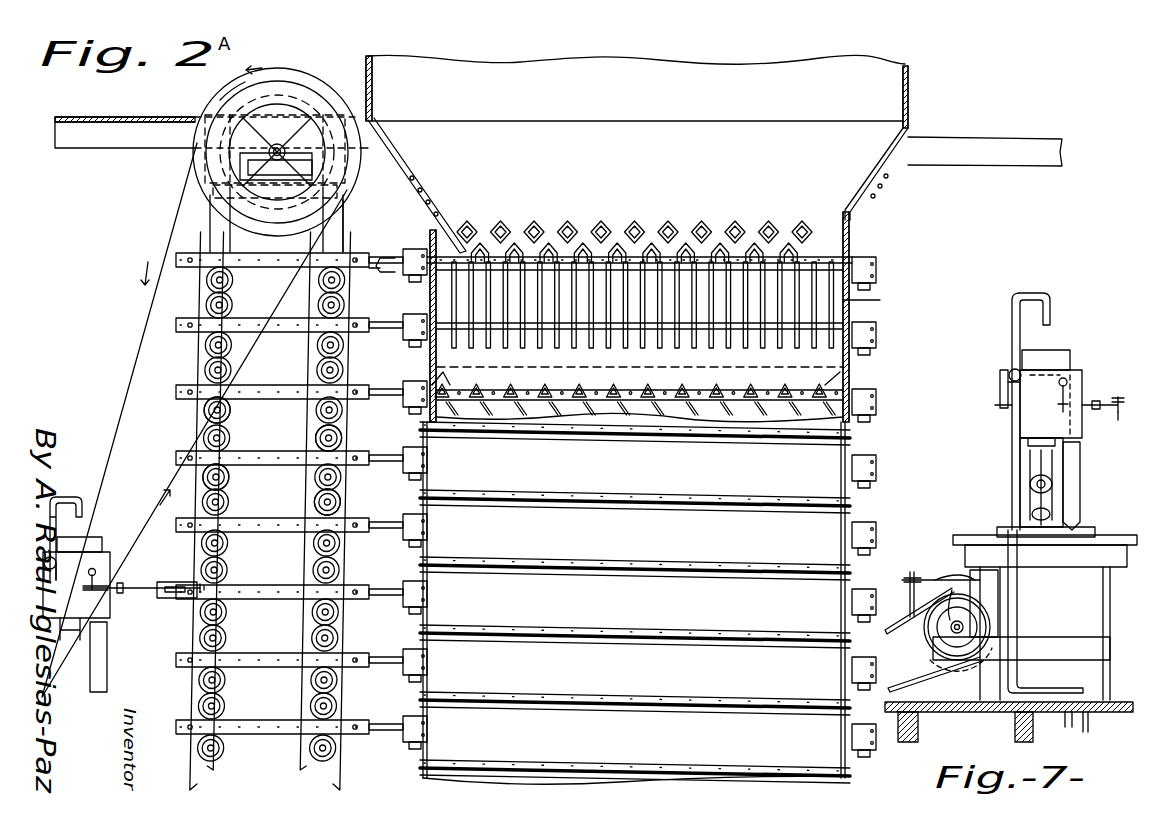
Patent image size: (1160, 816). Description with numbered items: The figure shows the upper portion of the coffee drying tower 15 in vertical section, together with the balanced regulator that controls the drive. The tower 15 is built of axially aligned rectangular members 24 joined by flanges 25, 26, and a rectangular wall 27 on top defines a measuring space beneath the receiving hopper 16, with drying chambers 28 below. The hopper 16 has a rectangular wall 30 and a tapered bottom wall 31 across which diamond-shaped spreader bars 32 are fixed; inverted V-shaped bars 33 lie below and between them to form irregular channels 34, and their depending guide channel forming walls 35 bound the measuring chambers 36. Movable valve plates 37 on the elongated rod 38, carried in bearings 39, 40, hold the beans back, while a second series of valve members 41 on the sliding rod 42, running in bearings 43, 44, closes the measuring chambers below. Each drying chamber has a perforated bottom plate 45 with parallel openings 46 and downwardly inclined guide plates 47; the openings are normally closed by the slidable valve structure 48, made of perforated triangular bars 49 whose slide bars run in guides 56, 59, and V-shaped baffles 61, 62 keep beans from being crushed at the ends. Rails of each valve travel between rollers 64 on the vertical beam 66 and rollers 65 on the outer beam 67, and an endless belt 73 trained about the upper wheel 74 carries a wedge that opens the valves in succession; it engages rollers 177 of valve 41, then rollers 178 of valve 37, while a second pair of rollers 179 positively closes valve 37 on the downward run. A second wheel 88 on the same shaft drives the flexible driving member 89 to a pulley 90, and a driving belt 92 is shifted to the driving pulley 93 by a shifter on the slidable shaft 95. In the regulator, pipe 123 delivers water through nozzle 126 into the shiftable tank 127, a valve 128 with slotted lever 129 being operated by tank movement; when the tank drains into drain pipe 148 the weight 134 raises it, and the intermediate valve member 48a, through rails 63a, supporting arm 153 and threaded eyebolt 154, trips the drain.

In FIG. 2A, the tower 15 is at (587, 775).
In FIG. 2A, the receiving hopper 16 is at (915, 107).
In FIG. 2A, the rectangular members 24 is at (635, 602).
In FIG. 2A, the flanges 25 is at (602, 710).
In FIG. 2A, the flanges 26 is at (666, 765).
In FIG. 2A, the rectangular wall 27 is at (855, 318).
In FIG. 2A, the drying chambers 28 is at (877, 372).
In FIG. 2A, the rectangular wall 30 is at (908, 80).
In FIG. 2A, the tapered bottom wall 31 is at (875, 162).
In FIG. 2A, the diamond-shaped spreader bars 32 is at (805, 222).
In FIG. 2A, the inverted V-shaped bars 33 is at (483, 255).
In FIG. 2A, the irregular channels 34 is at (548, 248).
In FIG. 2A, the guide channel forming walls 35 is at (490, 296).
In FIG. 2A, the measuring chambers 36 is at (880, 300).
In FIG. 2A, the movable valve plates 37 is at (460, 248).
In FIG. 2A, the elongated rod 38 is at (390, 258).
In FIG. 2A, the bearing 39 is at (410, 248).
In FIG. 2A, the bearing 40 is at (870, 256).
In FIG. 2A, the valve members 41 is at (586, 255).
In FIG. 2A, the sliding supporting rod 42 is at (568, 340).
In FIG. 2A, the bearing 43 is at (403, 352).
In FIG. 2A, the bearing 44 is at (877, 333).
In FIG. 2A, the bottom wall plate 45 is at (748, 415).
In FIG. 2A, the parallel openings 46 is at (698, 460).
In FIG. 2A, the inclined guide plates 47 is at (745, 425).
In FIG. 2A, the slidable valve structure 48 is at (486, 390).
In FIG. 2A, the intermediate valve member 48a is at (384, 586).
In FIG. 2A, the triangular bars 49 is at (620, 395).
In FIG. 2A, the guide 56 is at (877, 470).
In FIG. 7, the guide 56 is at (898, 582).
In FIG. 2A, the guide 59 is at (403, 500).
In FIG. 2A, the V-shaped baffle 61 is at (445, 374).
In FIG. 2A, the V-shaped baffle 62 is at (822, 382).
In FIG. 2A, the rails 63a is at (262, 586).
In FIG. 2A, the rollers 64 is at (318, 370).
In FIG. 2A, the rollers 65 is at (205, 368).
In FIG. 2A, the vertical beam 66 is at (318, 494).
In FIG. 2A, the vertical beam 67 is at (228, 484).
In FIG. 2A, the endless belt 73 is at (196, 170).
In FIG. 2A, the upper wheel 74 is at (300, 52).
In FIG. 2A, the second wheel 88 is at (216, 102).
In FIG. 2A, the flexible driving member 89 is at (150, 322).
In FIG. 7, the flexible driving member 89 is at (928, 575).
In FIG. 7, the pulley 90 is at (955, 585).
In FIG. 7, the driving belt 92 is at (930, 680).
In FIG. 7, the driving pulley 93 is at (932, 637).
In FIG. 7, the slidable shaft 95 is at (940, 578).
In FIG. 7, the pipe 123 is at (1012, 460).
In FIG. 7, the discharge nozzle 126 is at (1052, 310).
In FIG. 7, the vertically shiftable tank 127 is at (1082, 372).
In FIG. 7, the valve 128 is at (1012, 368).
In FIG. 7, the slotted lever 129 is at (1000, 388).
In FIG. 7, the weight 134 is at (1052, 352).
In FIG. 7, the drain pipe 148 is at (1080, 490).
In FIG. 2A, the supporting arm 153 is at (142, 575).
In FIG. 7, the supporting arm 153 is at (1111, 395).
In FIG. 2A, the threaded eyebolt 154 is at (132, 598).
In FIG. 7, the threaded eyebolt 154 is at (1110, 420).
In FIG. 2A, the rollers 177 is at (370, 273).
In FIG. 2A, the rollers 178 is at (352, 250).
In FIG. 2A, the second pair of rollers 179 is at (185, 254).